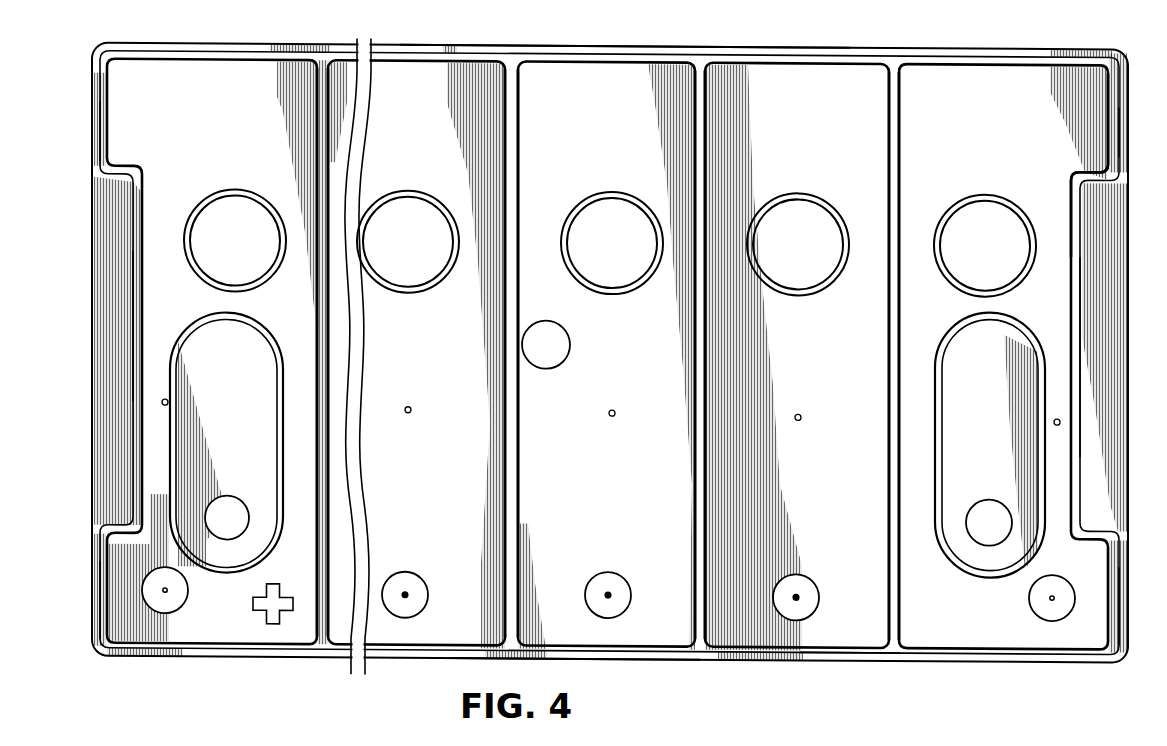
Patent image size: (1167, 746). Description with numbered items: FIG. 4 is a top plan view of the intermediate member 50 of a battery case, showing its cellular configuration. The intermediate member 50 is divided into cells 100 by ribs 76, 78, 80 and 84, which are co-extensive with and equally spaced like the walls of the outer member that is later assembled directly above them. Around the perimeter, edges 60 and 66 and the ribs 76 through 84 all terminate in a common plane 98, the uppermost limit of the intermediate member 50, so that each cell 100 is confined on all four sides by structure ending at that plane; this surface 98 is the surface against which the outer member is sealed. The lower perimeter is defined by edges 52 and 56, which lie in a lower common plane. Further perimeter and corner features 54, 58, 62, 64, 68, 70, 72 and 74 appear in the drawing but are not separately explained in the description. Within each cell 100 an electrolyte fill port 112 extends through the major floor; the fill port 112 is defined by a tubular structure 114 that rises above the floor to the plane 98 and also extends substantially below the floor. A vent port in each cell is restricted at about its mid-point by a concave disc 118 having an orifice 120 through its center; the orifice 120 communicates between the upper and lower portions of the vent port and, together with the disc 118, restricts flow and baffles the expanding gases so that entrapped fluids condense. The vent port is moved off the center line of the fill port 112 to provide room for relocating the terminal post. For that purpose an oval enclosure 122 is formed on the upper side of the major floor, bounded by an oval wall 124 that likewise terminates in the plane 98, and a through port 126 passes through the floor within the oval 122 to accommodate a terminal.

The intermediate member 50 is at (777, 662).
The edge 52 is at (853, 42).
The right side rim 54 is at (1128, 250).
The edge 56 is at (622, 656).
The left side rim 58 is at (92, 222).
The edge 60 is at (597, 45).
The upper right corner 62 is at (1120, 128).
The lower right corner 64 is at (1117, 583).
The edge 66 is at (867, 650).
The lower left corner 68 is at (97, 565).
The upper left corner 70 is at (97, 137).
The right side wall 72 is at (1082, 318).
The left side wall 74 is at (108, 303).
The rib 76 is at (889, 302).
The rib 78 is at (695, 292).
The rib 80 is at (505, 292).
The rib 84 is at (312, 302).
The common plane surface 98 is at (1071, 211).
The cell 100 is at (546, 405).
The electrolyte fill port 112 is at (217, 260).
The tubular structure 114 is at (243, 285).
The concave disc 118 is at (179, 588).
The orifice 120 is at (166, 592).
The oval enclosure 122 is at (969, 359).
The oval wall 124 is at (950, 334).
The through port 126 is at (231, 523).